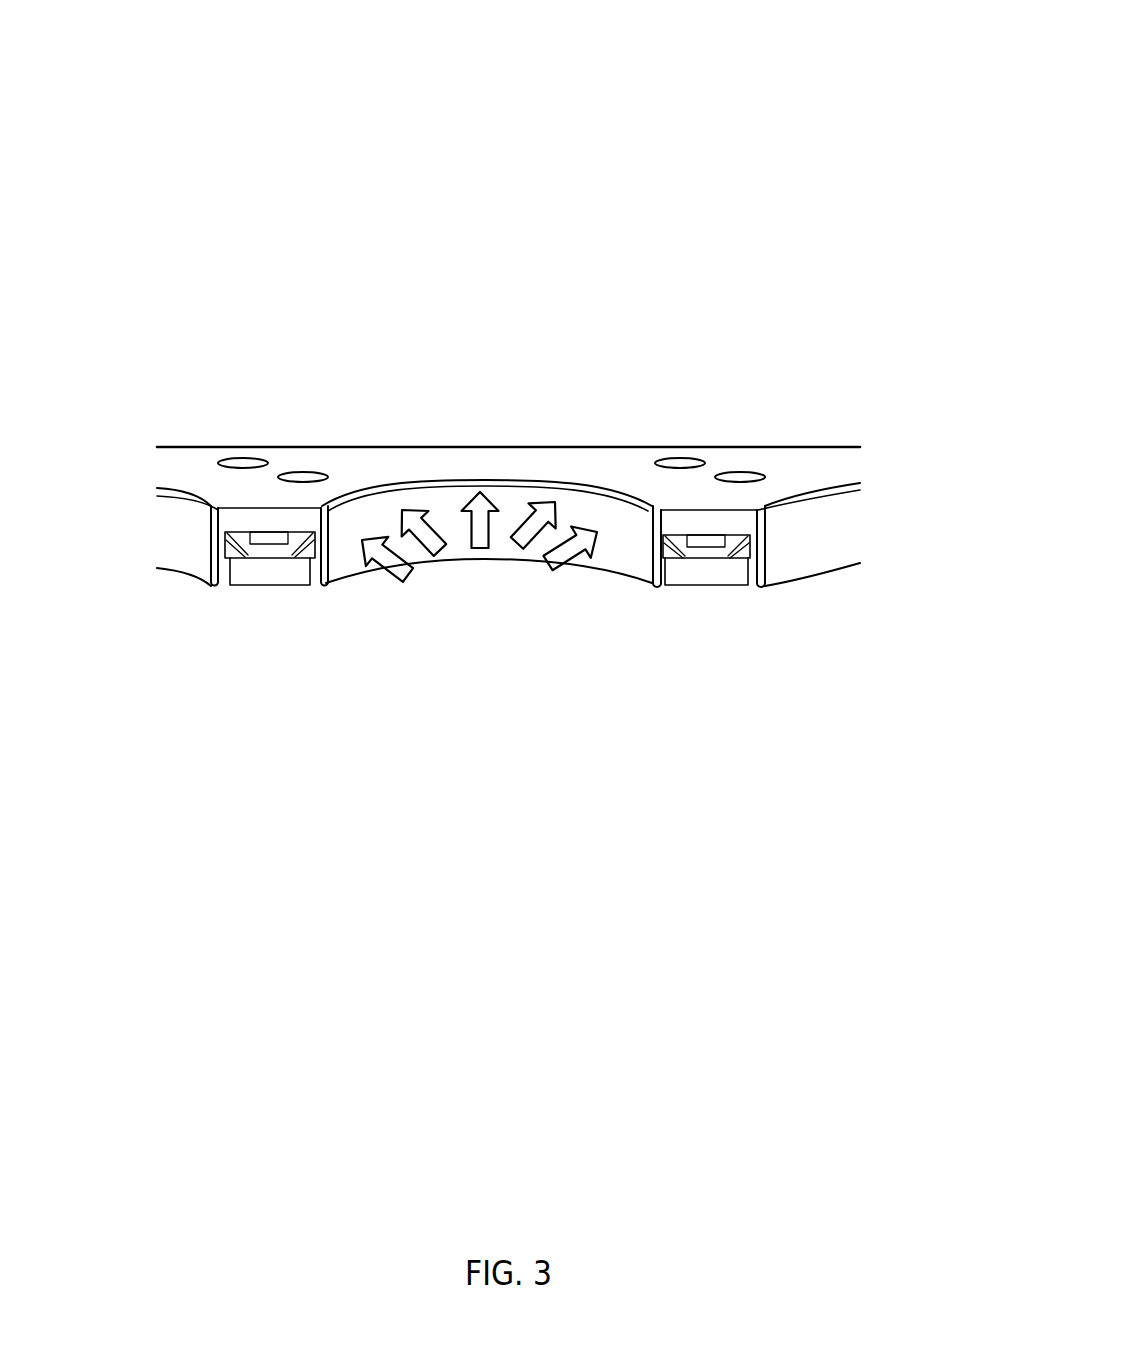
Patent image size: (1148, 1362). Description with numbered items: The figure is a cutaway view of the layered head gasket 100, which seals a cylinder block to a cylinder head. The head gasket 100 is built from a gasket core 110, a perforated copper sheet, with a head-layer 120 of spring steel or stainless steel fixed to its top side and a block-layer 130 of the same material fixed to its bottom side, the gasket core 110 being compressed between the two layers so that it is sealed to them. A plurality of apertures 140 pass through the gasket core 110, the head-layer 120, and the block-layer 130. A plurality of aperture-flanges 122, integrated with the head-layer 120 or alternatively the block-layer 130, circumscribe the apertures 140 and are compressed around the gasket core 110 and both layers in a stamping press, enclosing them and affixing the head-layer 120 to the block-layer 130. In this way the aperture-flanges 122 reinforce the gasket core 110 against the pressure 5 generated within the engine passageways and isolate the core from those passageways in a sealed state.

The head gasket 100 is at (830, 35).
The head-layer 120 is at (177, 492).
The plurality of apertures 140 is at (360, 470).
The pressure 5 is at (478, 490).
The plurality of aperture-flanges 122 is at (327, 583).
The gasket core 110 is at (255, 552).
The block-layer 130 is at (265, 578).